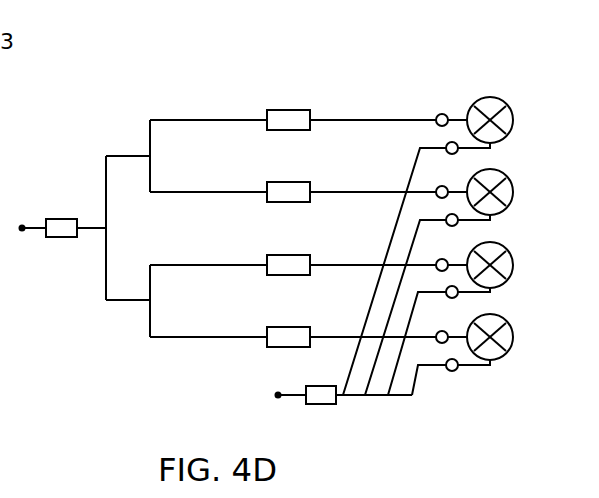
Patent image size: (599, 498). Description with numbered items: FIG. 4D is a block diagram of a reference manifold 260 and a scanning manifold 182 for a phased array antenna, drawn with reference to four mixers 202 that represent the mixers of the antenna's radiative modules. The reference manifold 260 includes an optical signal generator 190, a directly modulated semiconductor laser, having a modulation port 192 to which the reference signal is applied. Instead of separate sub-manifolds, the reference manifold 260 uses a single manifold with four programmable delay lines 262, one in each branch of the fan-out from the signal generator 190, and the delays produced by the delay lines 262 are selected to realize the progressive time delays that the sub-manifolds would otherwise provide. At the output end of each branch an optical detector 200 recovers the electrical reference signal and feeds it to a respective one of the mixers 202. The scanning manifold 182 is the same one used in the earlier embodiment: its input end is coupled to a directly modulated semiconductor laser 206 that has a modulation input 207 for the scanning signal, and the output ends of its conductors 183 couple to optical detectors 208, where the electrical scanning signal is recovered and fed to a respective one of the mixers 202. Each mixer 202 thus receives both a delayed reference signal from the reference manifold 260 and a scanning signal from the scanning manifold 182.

The scanning manifold 182 is at (363, 402).
The conductor line 183 is at (245, 193).
The optical signal generator 190 is at (59, 238).
The modulation port 192 is at (22, 226).
The optical detectors 200 is at (442, 114).
The mixers 202 is at (512, 130).
The directly modulated semiconductor laser 206 is at (320, 404).
The modulation input 207 is at (278, 395).
The optical detectors 208 is at (456, 372).
The reference manifold 260 is at (345, 97).
The programmable delay lines 262 is at (298, 110).